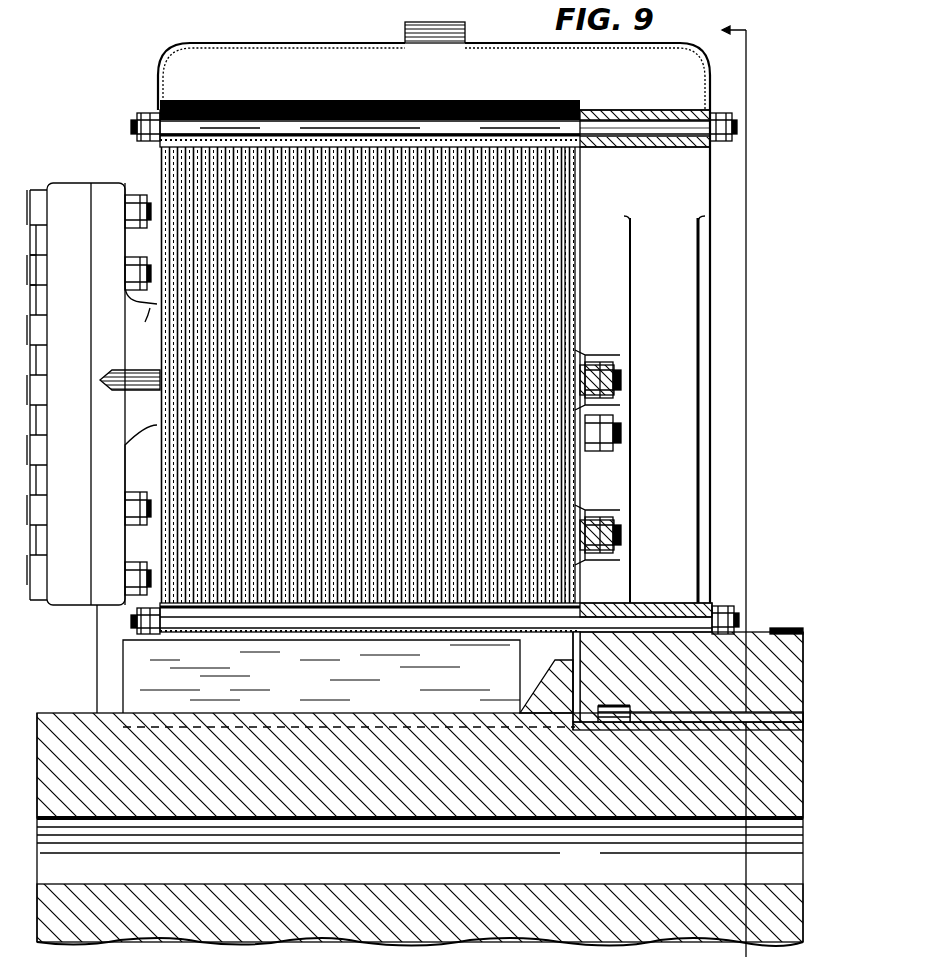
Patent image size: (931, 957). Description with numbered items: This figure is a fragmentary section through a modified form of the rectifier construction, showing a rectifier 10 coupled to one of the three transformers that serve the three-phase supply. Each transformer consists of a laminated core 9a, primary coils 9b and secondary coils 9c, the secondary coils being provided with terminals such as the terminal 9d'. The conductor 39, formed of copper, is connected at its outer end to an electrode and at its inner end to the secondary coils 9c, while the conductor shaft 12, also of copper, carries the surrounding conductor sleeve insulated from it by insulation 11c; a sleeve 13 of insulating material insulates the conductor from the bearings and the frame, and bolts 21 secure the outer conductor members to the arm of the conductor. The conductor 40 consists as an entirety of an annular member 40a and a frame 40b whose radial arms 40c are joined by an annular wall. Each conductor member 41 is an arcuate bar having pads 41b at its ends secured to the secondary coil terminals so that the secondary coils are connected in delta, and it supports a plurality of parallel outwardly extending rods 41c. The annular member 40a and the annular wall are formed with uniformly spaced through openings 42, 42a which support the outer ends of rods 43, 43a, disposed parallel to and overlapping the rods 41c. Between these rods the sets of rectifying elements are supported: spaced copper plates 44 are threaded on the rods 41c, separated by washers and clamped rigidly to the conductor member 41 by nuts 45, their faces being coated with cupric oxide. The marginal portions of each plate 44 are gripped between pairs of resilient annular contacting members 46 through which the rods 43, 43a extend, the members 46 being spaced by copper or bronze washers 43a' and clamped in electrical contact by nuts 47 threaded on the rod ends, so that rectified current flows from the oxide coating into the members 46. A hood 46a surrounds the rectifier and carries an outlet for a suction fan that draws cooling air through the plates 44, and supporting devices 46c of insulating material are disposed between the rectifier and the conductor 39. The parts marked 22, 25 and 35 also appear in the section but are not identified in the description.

The laminated core 9a is at (672, 500).
The primary coils 9b is at (33, 192).
The secondary coils 9c is at (40, 252).
The terminal 9d' is at (86, 433).
The rectifier 10 is at (723, 487).
The insulation 11c is at (578, 728).
The conductor shaft 12 is at (548, 698).
The sleeve 13 is at (788, 628).
The bolts 21 is at (362, 942).
The base layer 22 is at (201, 951).
The base layer 25 is at (273, 951).
The seal element 35 is at (614, 722).
The conductor 39 is at (660, 938).
The conductor 40 is at (690, 692).
The annular member 40a is at (748, 650).
The frame 40b is at (727, 410).
The radial arms 40c is at (694, 444).
The conductor members 41 is at (149, 303).
The pads 41b is at (111, 195).
The rods 41c is at (621, 430).
The through openings 42 is at (668, 612).
The through openings 42a is at (676, 118).
The rods 43 is at (628, 622).
The rods 43a is at (645, 115).
The washers 43a' is at (435, 375).
The plates 44 is at (598, 288).
The nuts 45 is at (590, 364).
The resilient annular members 46 is at (384, 43).
The hood 46a is at (465, 36).
The supporting devices 46c is at (123, 672).
The nuts 47 is at (155, 113).